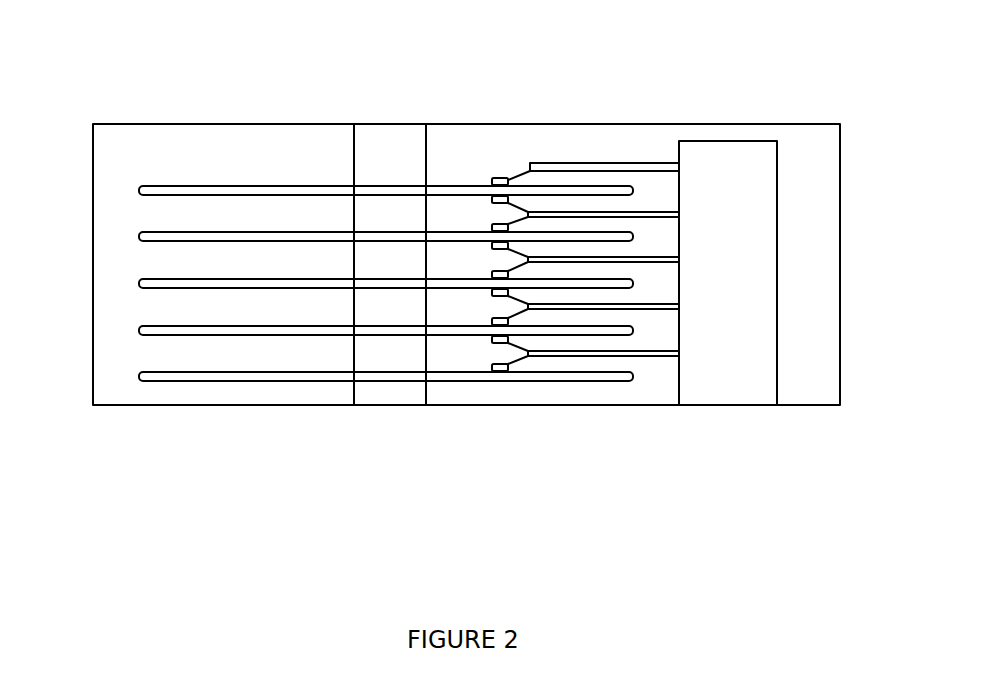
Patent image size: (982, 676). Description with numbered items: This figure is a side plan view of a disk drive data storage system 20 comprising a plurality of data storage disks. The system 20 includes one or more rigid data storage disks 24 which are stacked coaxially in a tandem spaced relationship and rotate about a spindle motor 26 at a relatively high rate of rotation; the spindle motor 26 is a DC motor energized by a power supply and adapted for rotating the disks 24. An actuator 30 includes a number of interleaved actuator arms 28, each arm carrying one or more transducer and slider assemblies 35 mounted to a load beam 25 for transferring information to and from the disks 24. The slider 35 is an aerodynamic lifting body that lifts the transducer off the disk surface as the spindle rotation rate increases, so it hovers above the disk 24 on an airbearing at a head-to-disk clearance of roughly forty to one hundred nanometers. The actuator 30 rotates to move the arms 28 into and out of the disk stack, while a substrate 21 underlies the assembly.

The data storage system 20 is at (745, 83).
The substrate 21 is at (840, 300).
The rigid data storage disks 24 is at (139, 188).
The load beam 25 is at (508, 180).
The spindle motor 26 is at (382, 397).
The actuator arms 28 is at (587, 163).
The actuator 30 is at (725, 383).
The slider 35 is at (492, 178).